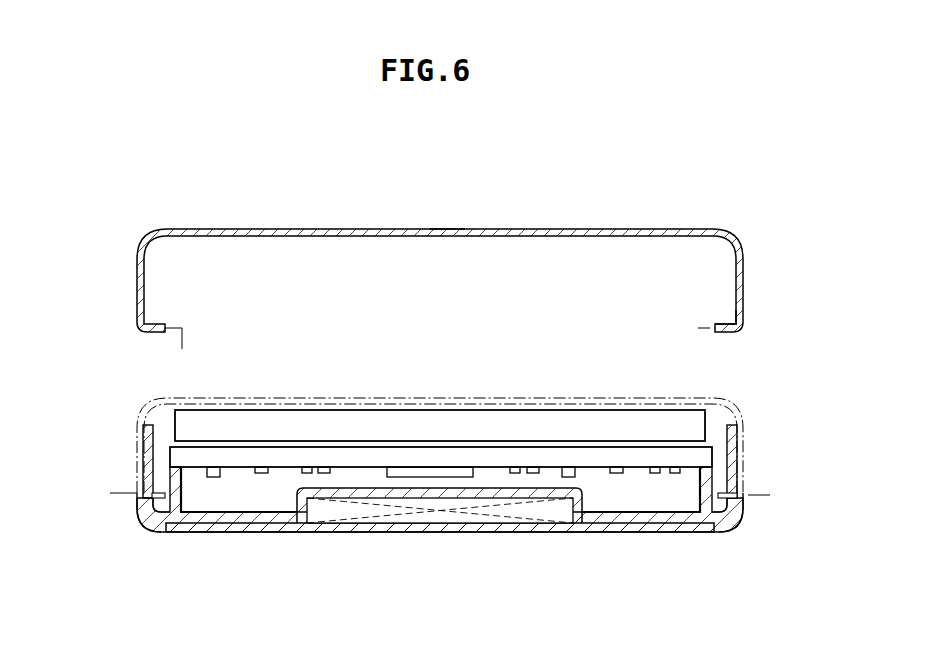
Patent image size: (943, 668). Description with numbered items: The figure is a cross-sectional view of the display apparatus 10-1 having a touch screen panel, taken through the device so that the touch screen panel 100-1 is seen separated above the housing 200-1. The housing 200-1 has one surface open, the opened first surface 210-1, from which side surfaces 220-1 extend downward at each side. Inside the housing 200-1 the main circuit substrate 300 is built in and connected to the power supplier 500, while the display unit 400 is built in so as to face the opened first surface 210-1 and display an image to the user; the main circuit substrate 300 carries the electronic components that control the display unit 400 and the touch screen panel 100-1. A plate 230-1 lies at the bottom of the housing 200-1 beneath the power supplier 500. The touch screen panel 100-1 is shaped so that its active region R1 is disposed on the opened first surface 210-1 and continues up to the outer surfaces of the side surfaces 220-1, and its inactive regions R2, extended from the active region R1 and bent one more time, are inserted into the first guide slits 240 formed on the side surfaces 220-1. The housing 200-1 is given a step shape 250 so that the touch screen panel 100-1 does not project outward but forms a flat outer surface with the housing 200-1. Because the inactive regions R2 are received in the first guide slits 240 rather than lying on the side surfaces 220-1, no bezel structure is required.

The display apparatus 10-1 is at (183, 199).
The touch screen panel 100-1 is at (703, 215).
The active region R1 is at (447, 230).
The inactive regions R2 is at (724, 322).
The housing 200-1 is at (743, 536).
The opened first surface 210-1 is at (536, 406).
The side surfaces 220-1 is at (147, 450).
The bottom plate 230-1 is at (230, 514).
The first guide slits 240 is at (139, 503).
The step shape 250 is at (150, 495).
The main circuit substrate 300 is at (703, 457).
The display unit 400 is at (694, 420).
The power supplier 500 is at (438, 516).